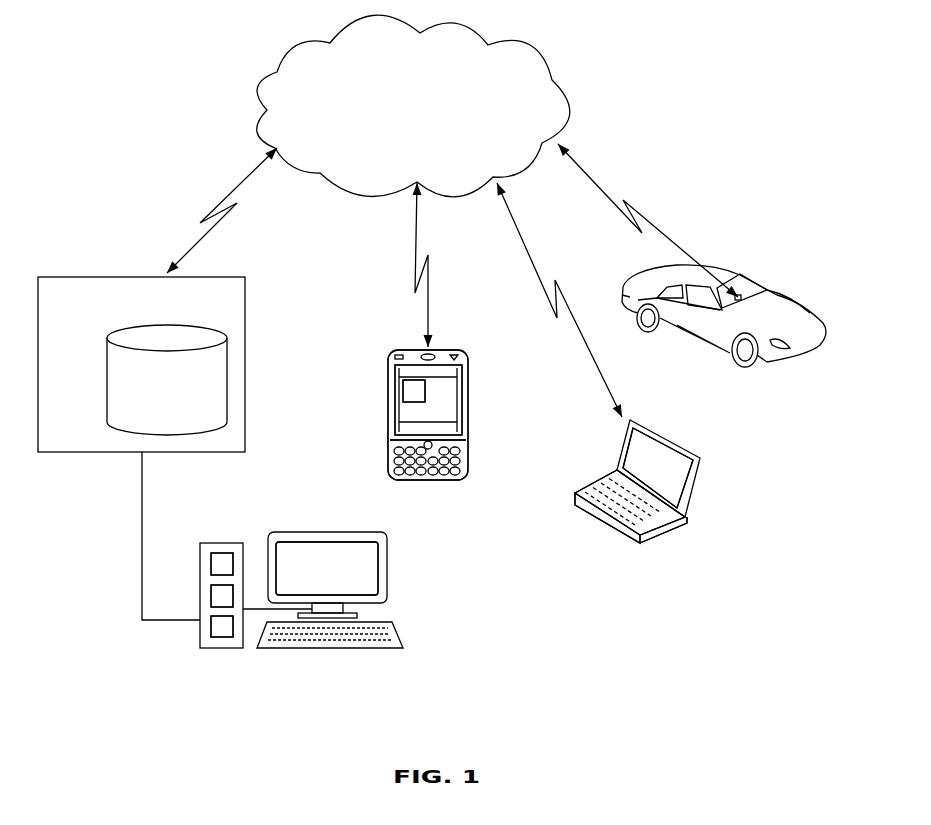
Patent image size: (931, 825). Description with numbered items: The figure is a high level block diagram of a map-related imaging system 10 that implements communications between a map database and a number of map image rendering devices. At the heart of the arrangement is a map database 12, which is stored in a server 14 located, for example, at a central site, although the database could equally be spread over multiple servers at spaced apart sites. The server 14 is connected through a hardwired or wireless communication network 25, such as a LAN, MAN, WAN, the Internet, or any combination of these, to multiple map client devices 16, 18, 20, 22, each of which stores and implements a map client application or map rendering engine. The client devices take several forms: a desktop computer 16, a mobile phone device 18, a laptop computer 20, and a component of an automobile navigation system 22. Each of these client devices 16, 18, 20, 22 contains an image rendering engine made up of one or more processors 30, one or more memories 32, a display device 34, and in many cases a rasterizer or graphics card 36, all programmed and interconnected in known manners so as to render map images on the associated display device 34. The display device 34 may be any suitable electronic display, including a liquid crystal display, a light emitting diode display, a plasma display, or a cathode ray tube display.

The map-related imaging system 10 is at (196, 124).
The map database 12 is at (228, 375).
The server 14 is at (92, 277).
The map client device 16 is at (405, 562).
The map client device 18 is at (467, 341).
The map client device 20 is at (708, 495).
The map client device 22 is at (818, 368).
The communication network 25 is at (467, 26).
The processor 30 is at (211, 558).
The memory 32 is at (211, 594).
The display device 34 is at (325, 550).
The rasterizer or graphics card 36 is at (211, 634).